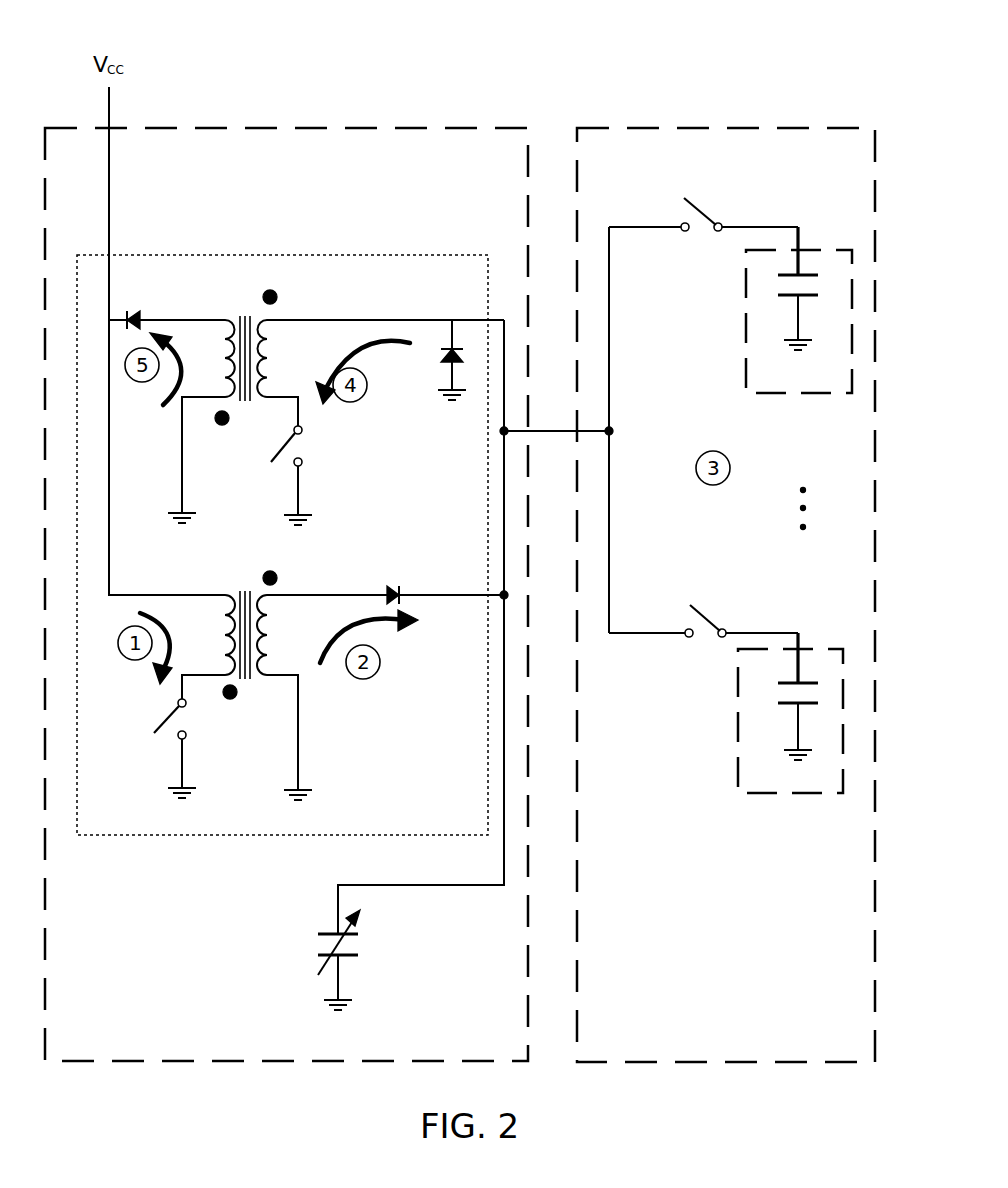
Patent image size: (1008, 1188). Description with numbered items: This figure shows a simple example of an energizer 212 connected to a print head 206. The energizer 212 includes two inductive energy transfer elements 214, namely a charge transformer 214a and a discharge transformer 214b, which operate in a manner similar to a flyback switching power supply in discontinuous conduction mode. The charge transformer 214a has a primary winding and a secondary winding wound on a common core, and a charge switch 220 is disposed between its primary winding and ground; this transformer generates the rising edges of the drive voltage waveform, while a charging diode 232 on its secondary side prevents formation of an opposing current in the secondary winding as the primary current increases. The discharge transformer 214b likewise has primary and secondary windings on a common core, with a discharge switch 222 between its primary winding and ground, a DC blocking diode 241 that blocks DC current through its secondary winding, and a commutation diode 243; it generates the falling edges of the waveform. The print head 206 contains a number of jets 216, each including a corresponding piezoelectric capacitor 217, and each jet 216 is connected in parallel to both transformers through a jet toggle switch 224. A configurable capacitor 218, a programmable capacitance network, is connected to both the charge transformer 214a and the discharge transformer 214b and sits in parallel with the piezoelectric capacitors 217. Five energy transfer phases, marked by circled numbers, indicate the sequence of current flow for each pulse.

The print head 206 is at (727, 1062).
The energizer 212 is at (168, 1063).
The inductive energy transfer elements 214 is at (160, 837).
The charge transformer 214a is at (277, 575).
The discharge transformer 214b is at (277, 293).
The jet 216 is at (815, 247).
The piezoelectric capacitor 217 is at (777, 288).
The configurable capacitor 218 is at (313, 958).
The charge switch 220 is at (168, 742).
The discharge switch 222 is at (280, 467).
The jet toggle switch 224 is at (680, 212).
The charging diode 232 is at (395, 578).
The DC blocking diode 241 is at (147, 298).
The commutation diode 243 is at (433, 365).